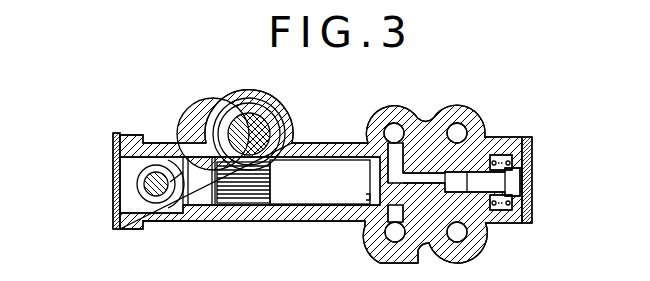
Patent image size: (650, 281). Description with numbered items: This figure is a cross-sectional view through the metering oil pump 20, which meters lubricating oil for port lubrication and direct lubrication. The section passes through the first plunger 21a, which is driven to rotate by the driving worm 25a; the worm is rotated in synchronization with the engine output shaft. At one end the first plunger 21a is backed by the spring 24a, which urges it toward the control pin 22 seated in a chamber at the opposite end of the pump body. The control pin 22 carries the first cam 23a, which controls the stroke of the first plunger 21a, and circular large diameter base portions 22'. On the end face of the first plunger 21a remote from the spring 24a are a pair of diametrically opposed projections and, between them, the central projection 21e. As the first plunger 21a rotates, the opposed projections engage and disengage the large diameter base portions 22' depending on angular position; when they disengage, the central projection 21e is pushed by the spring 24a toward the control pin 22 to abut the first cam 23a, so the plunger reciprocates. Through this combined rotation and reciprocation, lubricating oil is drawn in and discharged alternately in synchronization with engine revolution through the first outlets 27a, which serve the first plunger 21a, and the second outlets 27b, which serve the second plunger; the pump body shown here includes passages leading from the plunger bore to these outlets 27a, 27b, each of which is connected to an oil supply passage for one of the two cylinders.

The metering oil pump 20 is at (131, 126).
The first plunger 21a is at (315, 173).
The central projection 21e is at (176, 222).
The control pin 22 is at (122, 185).
The large diameter base portions 22' is at (119, 170).
The first cam 23a is at (157, 194).
The spring 24a is at (532, 175).
The driving worm 25a is at (232, 114).
The first outlets 27a is at (395, 131).
The second outlets 27b is at (459, 131).